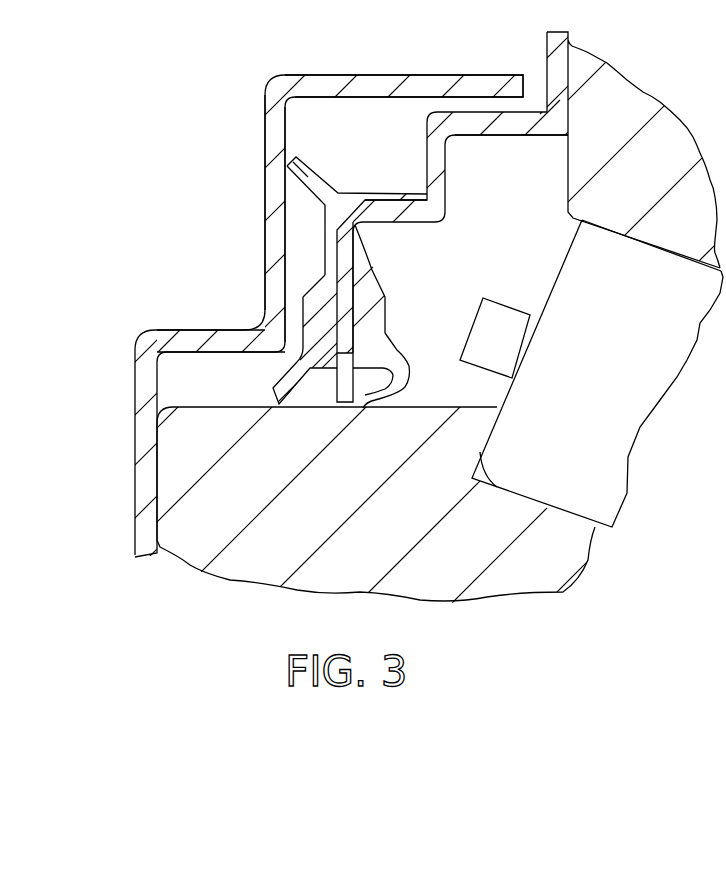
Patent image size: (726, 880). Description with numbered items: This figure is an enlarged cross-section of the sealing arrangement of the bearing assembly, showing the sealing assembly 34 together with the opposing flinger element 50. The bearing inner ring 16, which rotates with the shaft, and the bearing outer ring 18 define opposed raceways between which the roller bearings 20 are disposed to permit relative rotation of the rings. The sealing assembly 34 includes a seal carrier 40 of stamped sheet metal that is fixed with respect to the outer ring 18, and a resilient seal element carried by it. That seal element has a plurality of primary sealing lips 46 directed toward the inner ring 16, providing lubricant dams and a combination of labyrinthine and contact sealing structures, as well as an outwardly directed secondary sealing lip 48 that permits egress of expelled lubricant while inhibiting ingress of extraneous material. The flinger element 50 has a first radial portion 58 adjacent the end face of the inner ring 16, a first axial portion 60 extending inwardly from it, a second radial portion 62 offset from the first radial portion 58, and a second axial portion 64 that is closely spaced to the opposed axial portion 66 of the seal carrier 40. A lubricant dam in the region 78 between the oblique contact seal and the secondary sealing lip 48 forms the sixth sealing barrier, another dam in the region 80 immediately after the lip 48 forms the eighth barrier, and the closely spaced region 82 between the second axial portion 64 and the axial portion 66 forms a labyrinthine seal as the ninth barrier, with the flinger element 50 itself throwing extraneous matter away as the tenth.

The bearing inner ring 16 is at (282, 560).
The bearing outer ring 18 is at (655, 123).
The roller bearings 20 is at (614, 364).
The sealing assembly 34 is at (445, 232).
The seal carrier 40 is at (393, 226).
The primary sealing lips 46 is at (415, 378).
The secondary sealing lip 48 is at (315, 173).
The flinger element 50 is at (210, 163).
The first radial portion 58 is at (308, 330).
The first axial portion 60 is at (197, 328).
The second radial portion 62 is at (265, 193).
The second axial portion 64 is at (375, 73).
The opposed axial portion 66 is at (503, 137).
The lubricant dam region 78 is at (302, 258).
The lubricant dam region 80 is at (323, 113).
The closely spaced region 82 is at (482, 107).